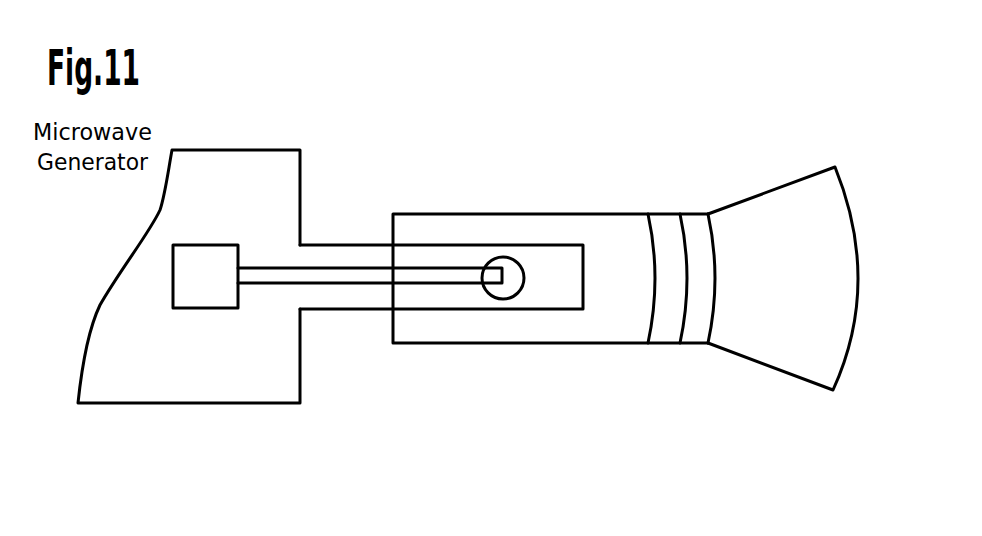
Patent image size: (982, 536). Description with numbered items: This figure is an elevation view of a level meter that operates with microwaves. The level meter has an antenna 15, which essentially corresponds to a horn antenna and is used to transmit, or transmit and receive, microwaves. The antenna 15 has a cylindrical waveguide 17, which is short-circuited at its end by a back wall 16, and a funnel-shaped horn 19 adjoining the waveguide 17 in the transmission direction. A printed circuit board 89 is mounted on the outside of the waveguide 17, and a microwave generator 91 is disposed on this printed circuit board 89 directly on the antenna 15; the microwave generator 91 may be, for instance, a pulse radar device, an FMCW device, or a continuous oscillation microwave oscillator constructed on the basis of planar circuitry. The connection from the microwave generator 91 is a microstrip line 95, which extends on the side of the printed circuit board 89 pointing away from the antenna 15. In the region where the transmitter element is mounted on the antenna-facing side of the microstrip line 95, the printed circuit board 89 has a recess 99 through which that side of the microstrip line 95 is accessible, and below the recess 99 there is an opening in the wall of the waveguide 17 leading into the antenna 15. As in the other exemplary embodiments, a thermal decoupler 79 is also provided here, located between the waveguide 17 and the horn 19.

The antenna 15 is at (593, 170).
The back wall 16 is at (390, 323).
The cylindrical waveguide 17 is at (513, 343).
The funnel-shaped horn 19 is at (780, 355).
The thermal decoupler 79 is at (670, 213).
The printed circuit board 89 is at (202, 390).
The microwave generator 91 is at (193, 270).
The microstrip line 95 is at (350, 268).
The recess 99 is at (503, 257).